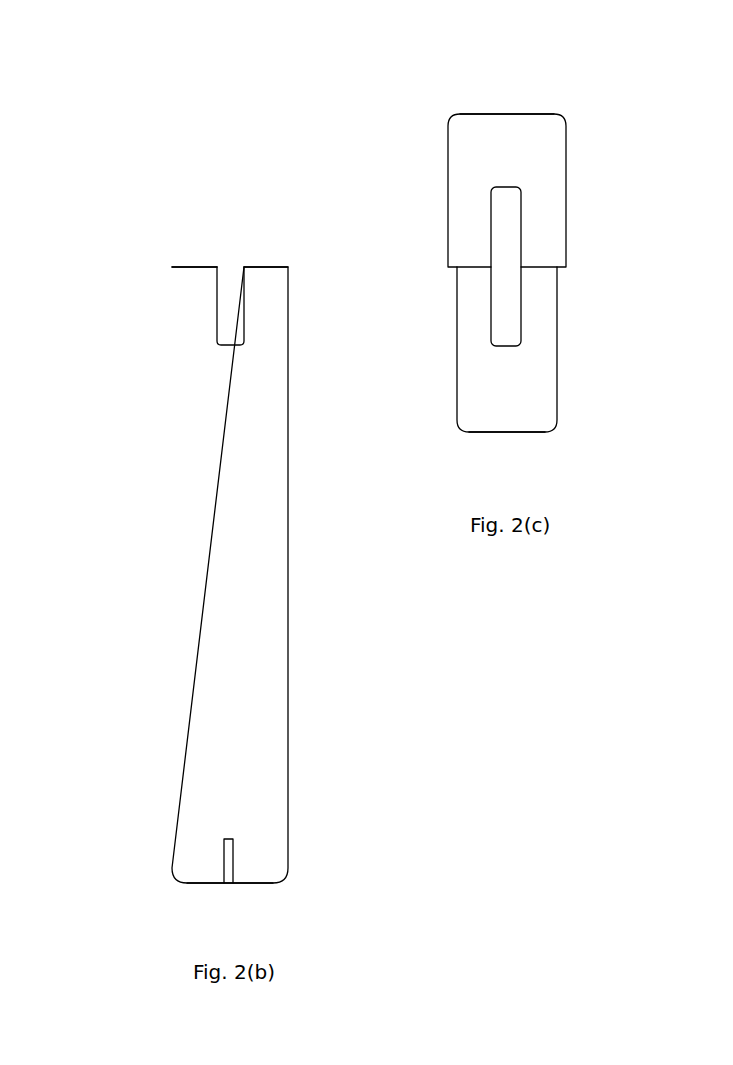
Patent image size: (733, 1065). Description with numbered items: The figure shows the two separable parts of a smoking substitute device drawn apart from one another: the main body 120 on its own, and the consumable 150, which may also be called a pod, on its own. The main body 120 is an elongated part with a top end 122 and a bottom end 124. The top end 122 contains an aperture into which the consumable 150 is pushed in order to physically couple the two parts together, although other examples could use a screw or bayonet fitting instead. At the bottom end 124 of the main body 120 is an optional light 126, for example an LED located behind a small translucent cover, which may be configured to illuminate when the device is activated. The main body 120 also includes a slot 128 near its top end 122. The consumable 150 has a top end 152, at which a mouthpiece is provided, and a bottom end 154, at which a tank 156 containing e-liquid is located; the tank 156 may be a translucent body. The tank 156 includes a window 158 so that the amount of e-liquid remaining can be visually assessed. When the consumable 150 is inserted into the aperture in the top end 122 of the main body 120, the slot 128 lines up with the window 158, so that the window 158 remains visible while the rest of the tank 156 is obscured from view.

In FIG. 2B, the main body 120 is at (172, 592).
In FIG. 2B, the top end 122 is at (233, 262).
In FIG. 2B, the bottom end 124 is at (248, 886).
In FIG. 2B, the light 126 is at (221, 862).
In FIG. 2B, the slot 128 is at (228, 303).
In FIG. 2C, the consumable 150 is at (450, 140).
In FIG. 2C, the top end 152 is at (519, 102).
In FIG. 2C, the bottom end 154 is at (517, 436).
In FIG. 2C, the tank 156 is at (497, 395).
In FIG. 2C, the window 158 is at (512, 247).